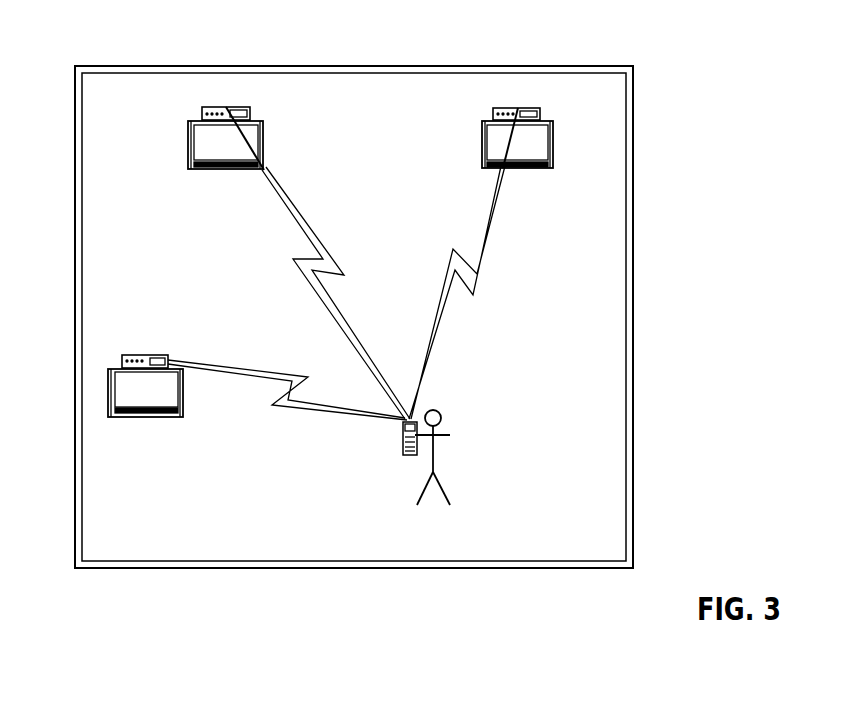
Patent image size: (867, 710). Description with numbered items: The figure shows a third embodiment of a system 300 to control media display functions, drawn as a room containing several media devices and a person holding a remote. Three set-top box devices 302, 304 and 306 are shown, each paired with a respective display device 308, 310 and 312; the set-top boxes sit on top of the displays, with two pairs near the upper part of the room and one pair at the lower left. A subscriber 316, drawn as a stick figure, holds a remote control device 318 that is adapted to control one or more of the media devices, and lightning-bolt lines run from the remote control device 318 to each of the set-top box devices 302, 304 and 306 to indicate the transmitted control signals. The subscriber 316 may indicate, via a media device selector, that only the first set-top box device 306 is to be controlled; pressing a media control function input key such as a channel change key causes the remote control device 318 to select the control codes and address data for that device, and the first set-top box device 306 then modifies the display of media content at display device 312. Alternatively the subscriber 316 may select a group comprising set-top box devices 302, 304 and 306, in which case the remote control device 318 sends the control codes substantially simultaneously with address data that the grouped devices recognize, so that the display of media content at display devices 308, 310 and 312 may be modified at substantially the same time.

The room / environment 300 is at (110, 66).
The set-top box device 302 is at (228, 107).
The set-top box device 304 is at (147, 355).
The first set-top box device 306 is at (518, 108).
The display device 308 is at (188, 145).
The display device 310 is at (145, 417).
The display device 312 is at (482, 145).
The subscriber 316 is at (450, 435).
The remote control device 318 is at (408, 455).